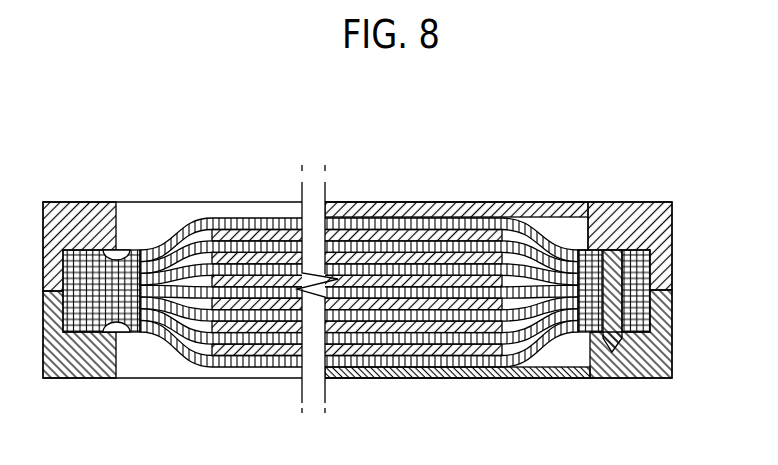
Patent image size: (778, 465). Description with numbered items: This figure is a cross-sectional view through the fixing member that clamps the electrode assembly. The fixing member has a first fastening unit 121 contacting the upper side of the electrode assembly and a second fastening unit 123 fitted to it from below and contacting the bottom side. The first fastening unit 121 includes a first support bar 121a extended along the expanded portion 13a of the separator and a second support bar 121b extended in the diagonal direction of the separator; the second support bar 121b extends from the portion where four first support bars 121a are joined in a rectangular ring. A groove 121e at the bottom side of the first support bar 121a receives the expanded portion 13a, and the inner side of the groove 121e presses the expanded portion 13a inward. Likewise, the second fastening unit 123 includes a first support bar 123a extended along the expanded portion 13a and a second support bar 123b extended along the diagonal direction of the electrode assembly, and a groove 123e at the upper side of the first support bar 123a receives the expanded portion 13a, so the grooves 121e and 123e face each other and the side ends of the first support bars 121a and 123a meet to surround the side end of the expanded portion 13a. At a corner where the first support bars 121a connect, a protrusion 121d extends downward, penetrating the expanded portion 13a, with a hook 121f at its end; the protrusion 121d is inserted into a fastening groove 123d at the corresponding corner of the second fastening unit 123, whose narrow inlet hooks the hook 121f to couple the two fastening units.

The first fastening unit 121 is at (449, 202).
The first support bar 121a is at (73, 213).
The second support bar 121b is at (388, 204).
The protrusion 121d is at (665, 276).
The groove 121e is at (130, 250).
The hook 121f is at (600, 358).
The second fastening unit 123 is at (441, 378).
The first support bar 123a is at (78, 380).
The second support bar 123b is at (386, 372).
The fastening groove 123d is at (622, 356).
The groove 123e is at (130, 334).
The expanded portion 13a is at (558, 233).